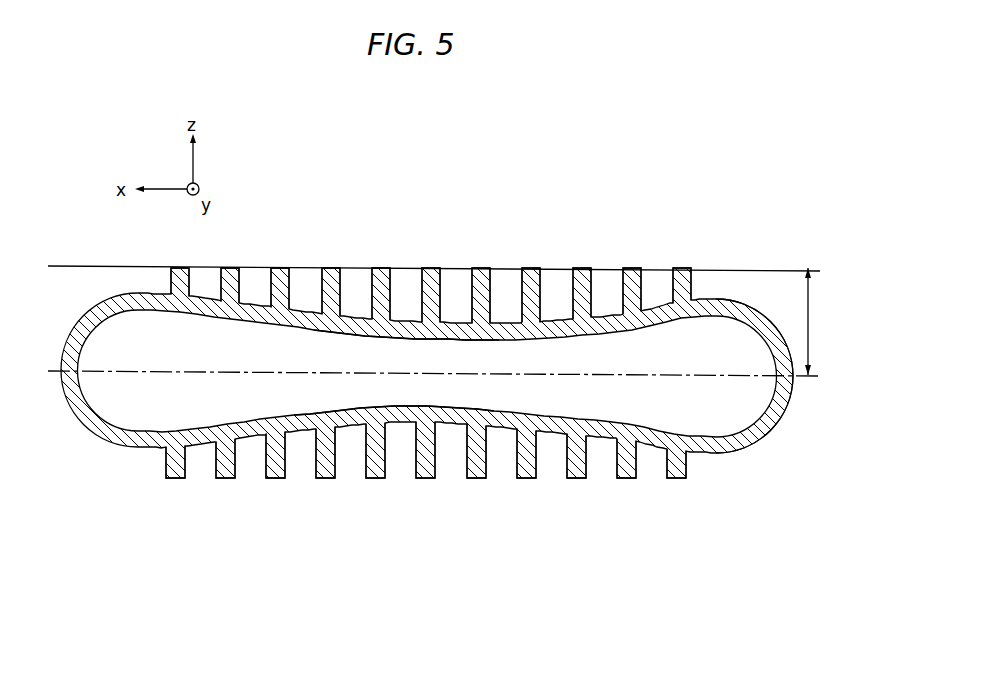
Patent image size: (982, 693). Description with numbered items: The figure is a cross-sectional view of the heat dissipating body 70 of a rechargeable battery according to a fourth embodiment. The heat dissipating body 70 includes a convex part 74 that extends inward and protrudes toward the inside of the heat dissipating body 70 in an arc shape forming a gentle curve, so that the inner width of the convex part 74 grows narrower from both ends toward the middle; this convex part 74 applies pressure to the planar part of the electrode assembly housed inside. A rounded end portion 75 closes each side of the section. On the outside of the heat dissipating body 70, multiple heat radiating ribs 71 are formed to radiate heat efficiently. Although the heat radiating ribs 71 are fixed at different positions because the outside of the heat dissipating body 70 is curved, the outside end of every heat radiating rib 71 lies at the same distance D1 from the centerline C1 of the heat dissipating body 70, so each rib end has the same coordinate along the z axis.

The heat dissipating body 70 is at (423, 359).
The heat radiating ribs 71 is at (630, 268).
The convex part 74 is at (422, 340).
The curved end portion 75 is at (777, 420).
The centerline C1 is at (725, 376).
The distance D1 is at (823, 321).